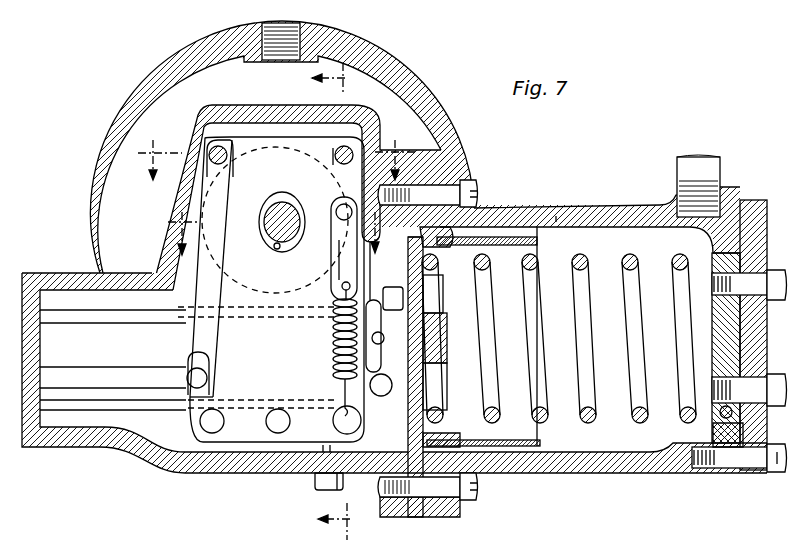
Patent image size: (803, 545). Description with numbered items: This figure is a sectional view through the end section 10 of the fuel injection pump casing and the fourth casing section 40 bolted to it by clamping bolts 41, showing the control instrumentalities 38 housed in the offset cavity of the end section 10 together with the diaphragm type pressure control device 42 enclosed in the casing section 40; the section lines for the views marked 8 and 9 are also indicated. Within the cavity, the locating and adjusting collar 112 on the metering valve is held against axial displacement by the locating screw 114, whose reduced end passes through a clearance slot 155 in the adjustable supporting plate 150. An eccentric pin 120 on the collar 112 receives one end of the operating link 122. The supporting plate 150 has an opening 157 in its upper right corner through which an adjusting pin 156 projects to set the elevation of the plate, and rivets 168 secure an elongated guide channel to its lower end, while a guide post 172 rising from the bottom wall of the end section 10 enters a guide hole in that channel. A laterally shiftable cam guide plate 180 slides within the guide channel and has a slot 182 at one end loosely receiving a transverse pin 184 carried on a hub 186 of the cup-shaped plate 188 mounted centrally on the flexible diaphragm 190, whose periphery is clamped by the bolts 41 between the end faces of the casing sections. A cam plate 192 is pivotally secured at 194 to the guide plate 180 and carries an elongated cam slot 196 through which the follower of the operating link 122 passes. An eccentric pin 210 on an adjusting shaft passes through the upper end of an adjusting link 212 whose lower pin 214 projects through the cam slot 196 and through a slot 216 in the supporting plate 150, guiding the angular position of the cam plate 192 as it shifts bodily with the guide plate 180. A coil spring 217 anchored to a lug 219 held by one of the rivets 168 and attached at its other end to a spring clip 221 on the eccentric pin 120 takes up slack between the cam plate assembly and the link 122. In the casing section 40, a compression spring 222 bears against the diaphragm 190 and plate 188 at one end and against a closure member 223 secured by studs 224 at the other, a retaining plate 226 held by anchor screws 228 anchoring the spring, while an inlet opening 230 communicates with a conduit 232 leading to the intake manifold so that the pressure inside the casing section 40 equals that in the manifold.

The section line 8- 8 is at (340, 301).
The section line 9- 9 is at (278, 151).
The end section 10 is at (172, 480).
The control instrumentalities 38 is at (149, 443).
The fourth casing section 40 is at (590, 210).
The clamping bolts 41 is at (478, 186).
The diaphragm type pressure control device 42 is at (563, 216).
The locating and adjusting collar 112 is at (268, 147).
The locating screw 114 is at (272, 205).
The eccentric pin 120 is at (340, 208).
The operating link 122 is at (341, 287).
The adjustable supporting plate 150 is at (340, 147).
The clearance slot 155 is at (274, 247).
The adjusting pin 156 is at (333, 152).
The opening 157 is at (332, 143).
The rivets 168 is at (408, 436).
The guide post 172 is at (328, 491).
The cam guide plate 180 is at (126, 322).
The slot 182 is at (405, 270).
The transverse pin 184 is at (372, 340).
The hub 186 is at (440, 280).
The cup-shaped plate 188 is at (408, 268).
The flexible diaphragm 190 is at (548, 446).
The cam plate 192 is at (88, 325).
The pivot 194 is at (385, 397).
The cam slot 196 is at (116, 368).
The eccentric pin 210 is at (220, 150).
The adjusting link 212 is at (197, 331).
The pin 214 is at (187, 377).
The slot 216 is at (214, 402).
The coil spring 217 is at (333, 372).
The lug 219 is at (336, 410).
The spring clip 221 is at (337, 245).
The compression spring 222 is at (582, 262).
The closure member 223 is at (758, 246).
The studs 224 is at (776, 474).
The retaining plate 226 is at (720, 416).
The anchor screws 228 is at (776, 275).
The inlet opening 230 is at (702, 232).
The conduit 232 is at (722, 176).